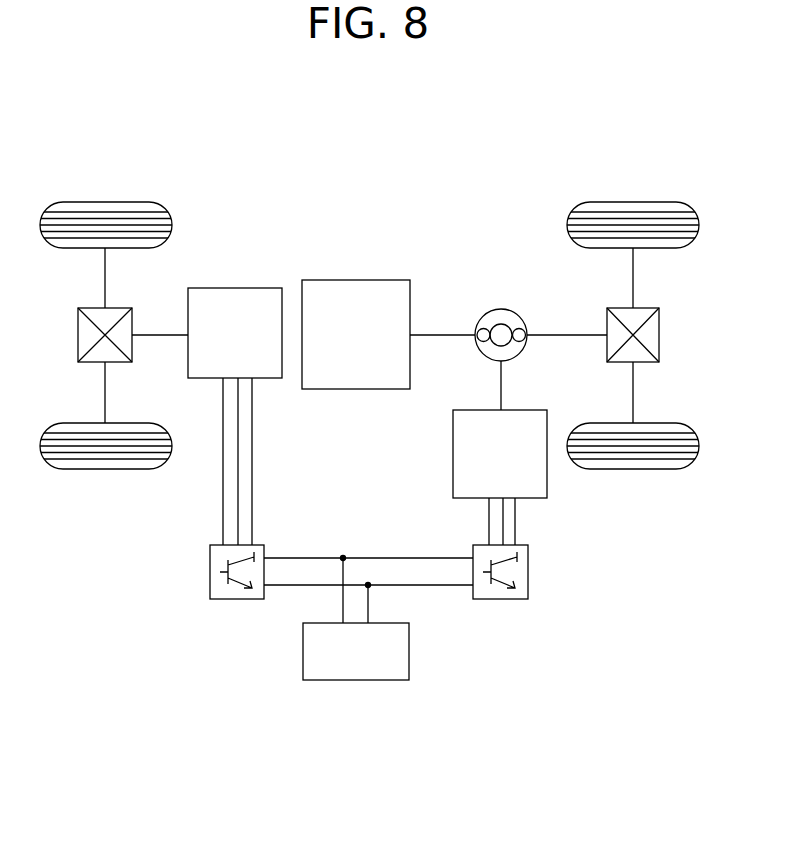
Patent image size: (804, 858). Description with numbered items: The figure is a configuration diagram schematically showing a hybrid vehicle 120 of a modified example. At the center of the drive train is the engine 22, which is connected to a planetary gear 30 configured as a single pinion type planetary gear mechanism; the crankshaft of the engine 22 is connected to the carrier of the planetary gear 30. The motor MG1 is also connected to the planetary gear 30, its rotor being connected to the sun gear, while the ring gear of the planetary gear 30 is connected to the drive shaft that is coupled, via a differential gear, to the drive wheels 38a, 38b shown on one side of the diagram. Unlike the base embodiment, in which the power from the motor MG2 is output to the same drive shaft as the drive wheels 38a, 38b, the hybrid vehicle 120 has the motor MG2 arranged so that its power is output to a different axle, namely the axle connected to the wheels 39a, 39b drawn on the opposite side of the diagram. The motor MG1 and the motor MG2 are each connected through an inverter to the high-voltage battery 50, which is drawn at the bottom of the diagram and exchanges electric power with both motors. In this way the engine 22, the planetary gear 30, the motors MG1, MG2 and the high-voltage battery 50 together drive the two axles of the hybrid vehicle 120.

The hybrid vehicle 120 is at (510, 183).
The engine 22 is at (355, 280).
The planetary gear 30 is at (502, 309).
The drive wheel 38a is at (633, 200).
The drive wheel 38b is at (633, 470).
The wheel 39a is at (105, 200).
The wheel 39b is at (105, 470).
The high-voltage battery 50 is at (411, 650).
The motor MG1 is at (453, 454).
The motor MG2 is at (238, 288).